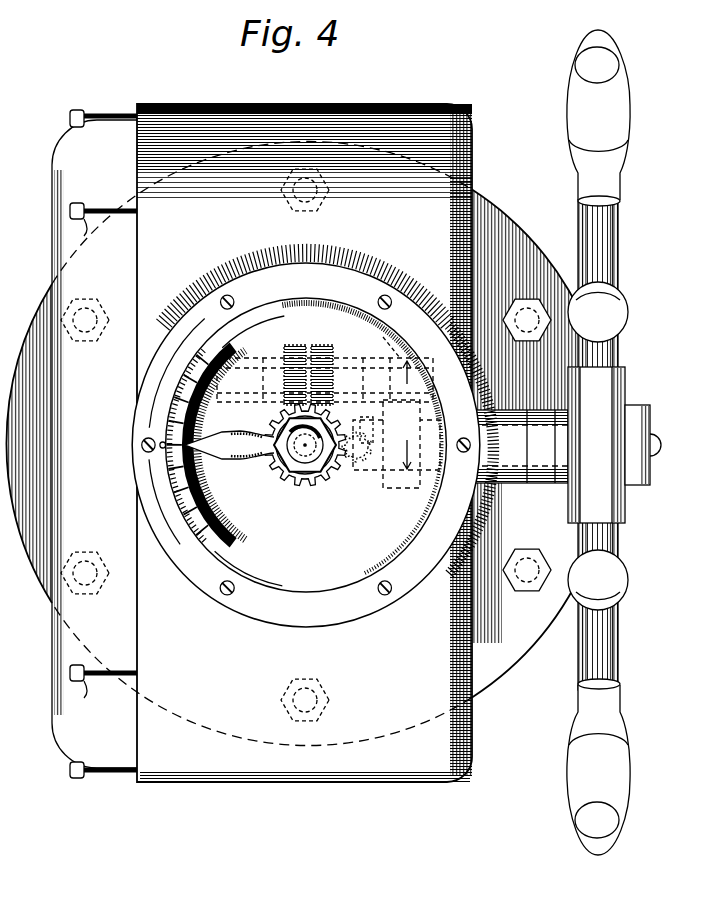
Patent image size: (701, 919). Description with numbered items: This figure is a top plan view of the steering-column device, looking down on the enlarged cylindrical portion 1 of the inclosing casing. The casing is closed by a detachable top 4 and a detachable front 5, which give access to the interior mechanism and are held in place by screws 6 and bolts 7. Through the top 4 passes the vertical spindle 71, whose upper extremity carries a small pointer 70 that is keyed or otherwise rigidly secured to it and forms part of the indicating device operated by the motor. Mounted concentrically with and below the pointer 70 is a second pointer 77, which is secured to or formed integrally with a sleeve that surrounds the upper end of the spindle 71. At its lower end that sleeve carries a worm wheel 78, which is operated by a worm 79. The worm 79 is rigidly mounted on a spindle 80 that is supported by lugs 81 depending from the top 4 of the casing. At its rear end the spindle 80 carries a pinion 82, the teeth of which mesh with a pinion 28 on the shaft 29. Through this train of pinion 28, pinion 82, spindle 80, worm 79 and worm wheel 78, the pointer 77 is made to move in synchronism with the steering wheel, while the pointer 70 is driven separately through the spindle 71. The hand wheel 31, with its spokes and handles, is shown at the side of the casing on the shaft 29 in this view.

The enlarged cylindrical portion 1 is at (400, 776).
The top 4 is at (307, 588).
The front 5 is at (68, 716).
The screws 6 is at (223, 594).
The bolts 7 is at (70, 772).
The pinion 28 is at (398, 487).
The shaft 29 is at (472, 470).
The hand wheel 31 is at (616, 649).
The pointer 70 is at (270, 460).
The spindle 71 is at (297, 482).
The pointer 77 is at (238, 432).
The worm wheel 78 is at (340, 478).
The worm 79 is at (320, 358).
The spindle 80 is at (292, 358).
The lugs 81 is at (248, 368).
The pinion 82 is at (384, 338).